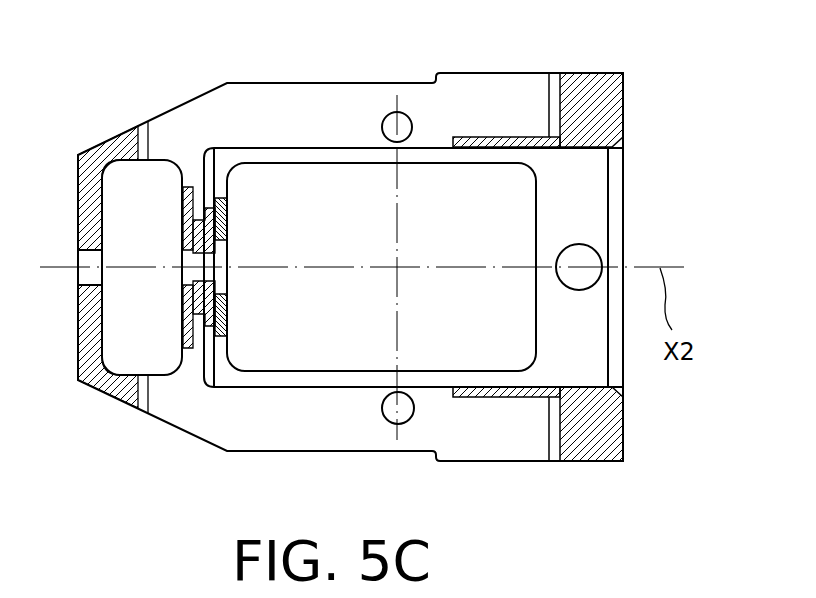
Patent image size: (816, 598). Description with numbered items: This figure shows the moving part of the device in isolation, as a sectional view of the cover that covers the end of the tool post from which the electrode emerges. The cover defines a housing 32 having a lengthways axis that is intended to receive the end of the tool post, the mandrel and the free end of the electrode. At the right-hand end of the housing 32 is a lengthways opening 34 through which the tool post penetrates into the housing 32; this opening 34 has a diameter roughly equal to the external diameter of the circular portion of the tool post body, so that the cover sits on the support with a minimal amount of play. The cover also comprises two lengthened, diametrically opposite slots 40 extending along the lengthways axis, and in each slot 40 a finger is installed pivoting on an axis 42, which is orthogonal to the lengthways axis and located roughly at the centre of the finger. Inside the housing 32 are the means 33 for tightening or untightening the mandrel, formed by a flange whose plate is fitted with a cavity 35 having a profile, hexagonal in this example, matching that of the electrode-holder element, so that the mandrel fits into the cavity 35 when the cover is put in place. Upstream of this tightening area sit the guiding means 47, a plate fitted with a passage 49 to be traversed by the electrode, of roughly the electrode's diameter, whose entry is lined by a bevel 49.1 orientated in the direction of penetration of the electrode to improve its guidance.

The slot 40 is at (280, 108).
The axis 42 is at (383, 115).
The housing 32 is at (463, 186).
The lengthways opening 34 is at (620, 148).
The means for guiding the free end of the electrode 47 is at (209, 208).
The means to untighten or tighten the mandrel 33 is at (231, 221).
The bevel 49.1 is at (216, 253).
The cavity 35 is at (218, 292).
The passage 49 is at (183, 271).